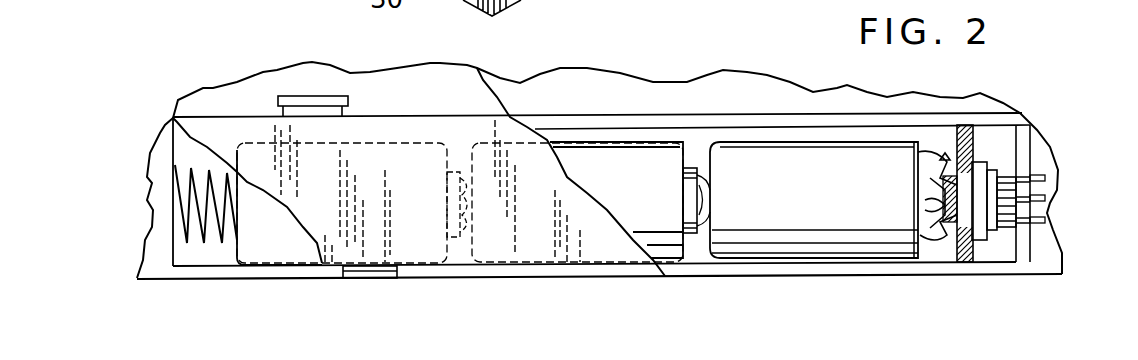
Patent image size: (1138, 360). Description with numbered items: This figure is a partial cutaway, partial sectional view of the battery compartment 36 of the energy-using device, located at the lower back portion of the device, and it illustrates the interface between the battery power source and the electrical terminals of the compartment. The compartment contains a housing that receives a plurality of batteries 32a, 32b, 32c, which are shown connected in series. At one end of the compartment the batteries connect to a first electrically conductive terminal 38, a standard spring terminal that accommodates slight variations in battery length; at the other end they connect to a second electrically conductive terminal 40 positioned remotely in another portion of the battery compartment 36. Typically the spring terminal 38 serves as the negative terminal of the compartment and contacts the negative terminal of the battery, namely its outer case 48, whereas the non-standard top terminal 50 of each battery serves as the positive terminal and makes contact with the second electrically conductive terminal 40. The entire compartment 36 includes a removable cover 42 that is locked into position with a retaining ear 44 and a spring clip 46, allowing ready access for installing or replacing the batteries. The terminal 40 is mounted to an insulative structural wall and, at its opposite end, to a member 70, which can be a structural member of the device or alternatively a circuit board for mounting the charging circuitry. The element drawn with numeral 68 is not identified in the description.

The battery 32a is at (823, 194).
The battery 32b is at (657, 194).
The battery 32c is at (297, 258).
The battery compartment 36 is at (694, 140).
The first electrically conductive terminal 38 is at (173, 196).
The second electrically conductive terminal 40 is at (928, 153).
The removable cover 42 is at (417, 130).
The retaining ear 44 is at (366, 279).
The spring clip 46 is at (307, 97).
The outer case 48 is at (587, 142).
The top terminal 50 is at (925, 210).
The insulating post 68 is at (975, 244).
The member 70 is at (1023, 241).